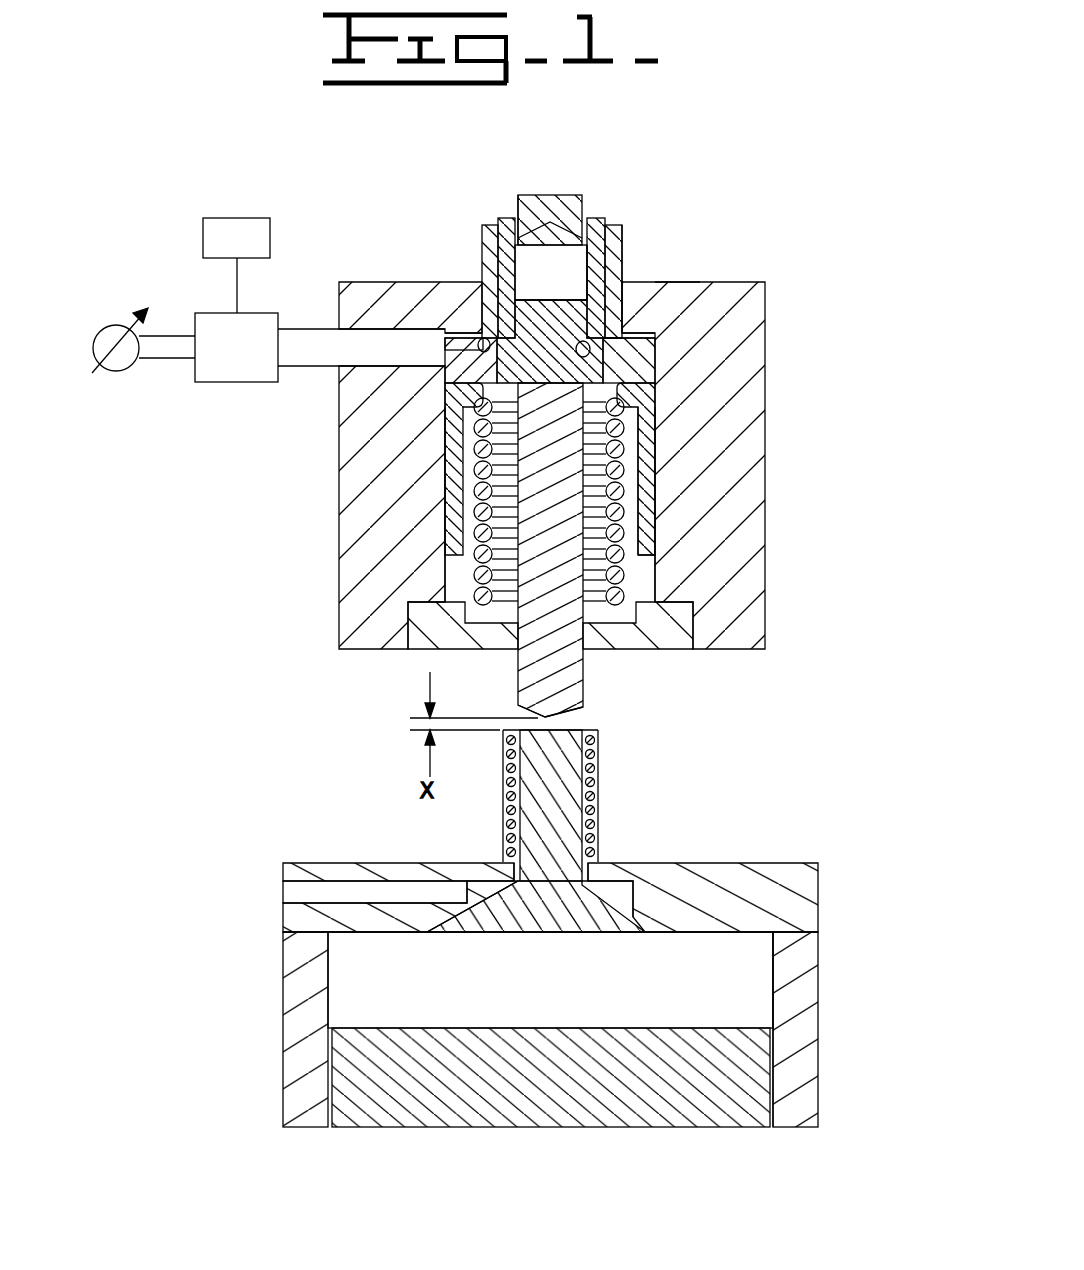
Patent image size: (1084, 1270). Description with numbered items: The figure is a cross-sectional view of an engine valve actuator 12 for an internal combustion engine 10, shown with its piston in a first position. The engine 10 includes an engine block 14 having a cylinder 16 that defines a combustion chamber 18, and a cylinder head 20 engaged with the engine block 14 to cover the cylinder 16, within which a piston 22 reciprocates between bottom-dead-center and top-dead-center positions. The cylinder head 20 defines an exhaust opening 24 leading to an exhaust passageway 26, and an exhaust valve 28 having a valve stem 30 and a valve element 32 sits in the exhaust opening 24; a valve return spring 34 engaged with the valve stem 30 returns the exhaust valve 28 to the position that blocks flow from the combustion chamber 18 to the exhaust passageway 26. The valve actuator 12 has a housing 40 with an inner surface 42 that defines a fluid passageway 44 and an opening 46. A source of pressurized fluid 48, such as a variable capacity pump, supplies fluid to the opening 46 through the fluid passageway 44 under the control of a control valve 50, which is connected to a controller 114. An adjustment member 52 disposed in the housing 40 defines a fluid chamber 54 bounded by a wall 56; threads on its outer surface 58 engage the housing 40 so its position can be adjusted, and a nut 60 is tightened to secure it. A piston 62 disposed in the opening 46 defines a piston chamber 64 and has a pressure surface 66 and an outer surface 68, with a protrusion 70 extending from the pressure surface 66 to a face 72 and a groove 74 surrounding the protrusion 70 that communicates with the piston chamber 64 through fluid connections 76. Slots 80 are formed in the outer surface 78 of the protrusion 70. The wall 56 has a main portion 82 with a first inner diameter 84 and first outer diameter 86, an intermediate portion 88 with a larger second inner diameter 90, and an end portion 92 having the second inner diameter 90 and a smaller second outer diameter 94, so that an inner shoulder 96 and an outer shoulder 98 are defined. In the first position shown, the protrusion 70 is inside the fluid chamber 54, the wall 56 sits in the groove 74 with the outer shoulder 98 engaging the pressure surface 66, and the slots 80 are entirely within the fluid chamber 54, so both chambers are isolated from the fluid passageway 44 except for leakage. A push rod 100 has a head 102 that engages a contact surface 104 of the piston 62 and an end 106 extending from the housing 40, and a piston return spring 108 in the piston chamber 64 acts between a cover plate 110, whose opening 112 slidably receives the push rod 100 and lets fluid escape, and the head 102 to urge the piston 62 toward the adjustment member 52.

The internal combustion engine 10 is at (771, 823).
The engine valve actuator 12 is at (778, 153).
The engine block 14 is at (800, 1102).
The cylinder 16 is at (772, 994).
The combustion chamber 18 is at (538, 1002).
The cylinder head 20 is at (733, 902).
The piston 22 is at (545, 1091).
The exhaust opening 24 is at (637, 905).
The exhaust passageway 26 is at (340, 890).
The exhaust valve 28 is at (496, 940).
The valve stem 30 is at (537, 822).
The valve element 32 is at (587, 934).
The valve return spring 34 is at (598, 757).
The housing 40 is at (660, 324).
The inner surface 42 is at (455, 320).
The fluid passageway 44 is at (308, 362).
The opening 46 is at (412, 315).
The source of pressurized fluid 48 is at (117, 372).
The control valve 50 is at (225, 361).
The adjustment member 52 is at (533, 205).
The fluid chamber 54 is at (555, 284).
The fluid chamber wall 56 is at (633, 282).
The outer surface 58 is at (607, 222).
The nut 60 is at (627, 245).
The piston 62 is at (648, 395).
The piston chamber 64 is at (650, 505).
The pressure surface 66 is at (450, 340).
The outer surface 68 is at (660, 560).
The protrusion 70 is at (677, 282).
The face 72 is at (530, 235).
The groove 74 is at (455, 375).
The fluid connections 76 is at (650, 378).
The outer surface 78 is at (487, 300).
The slots 80 is at (505, 258).
The main portion 82 is at (625, 275).
The first inner diameter 84 is at (545, 298).
The first outer diameter 86 is at (620, 238).
The intermediate portion 88 is at (740, 283).
The second inner diameter 90 is at (660, 350).
The end portion 92 is at (750, 310).
The second outer diameter 94 is at (700, 352).
The inner shoulder 96 is at (562, 298).
The outer shoulder 98 is at (490, 338).
The push rod 100 is at (530, 514).
The head 102 is at (640, 432).
The contact surface 104 is at (470, 420).
The end 106 is at (560, 718).
The piston return spring 108 is at (455, 600).
The cover plate 110 is at (640, 625).
The opening 112 is at (518, 655).
The controller 114 is at (219, 254).